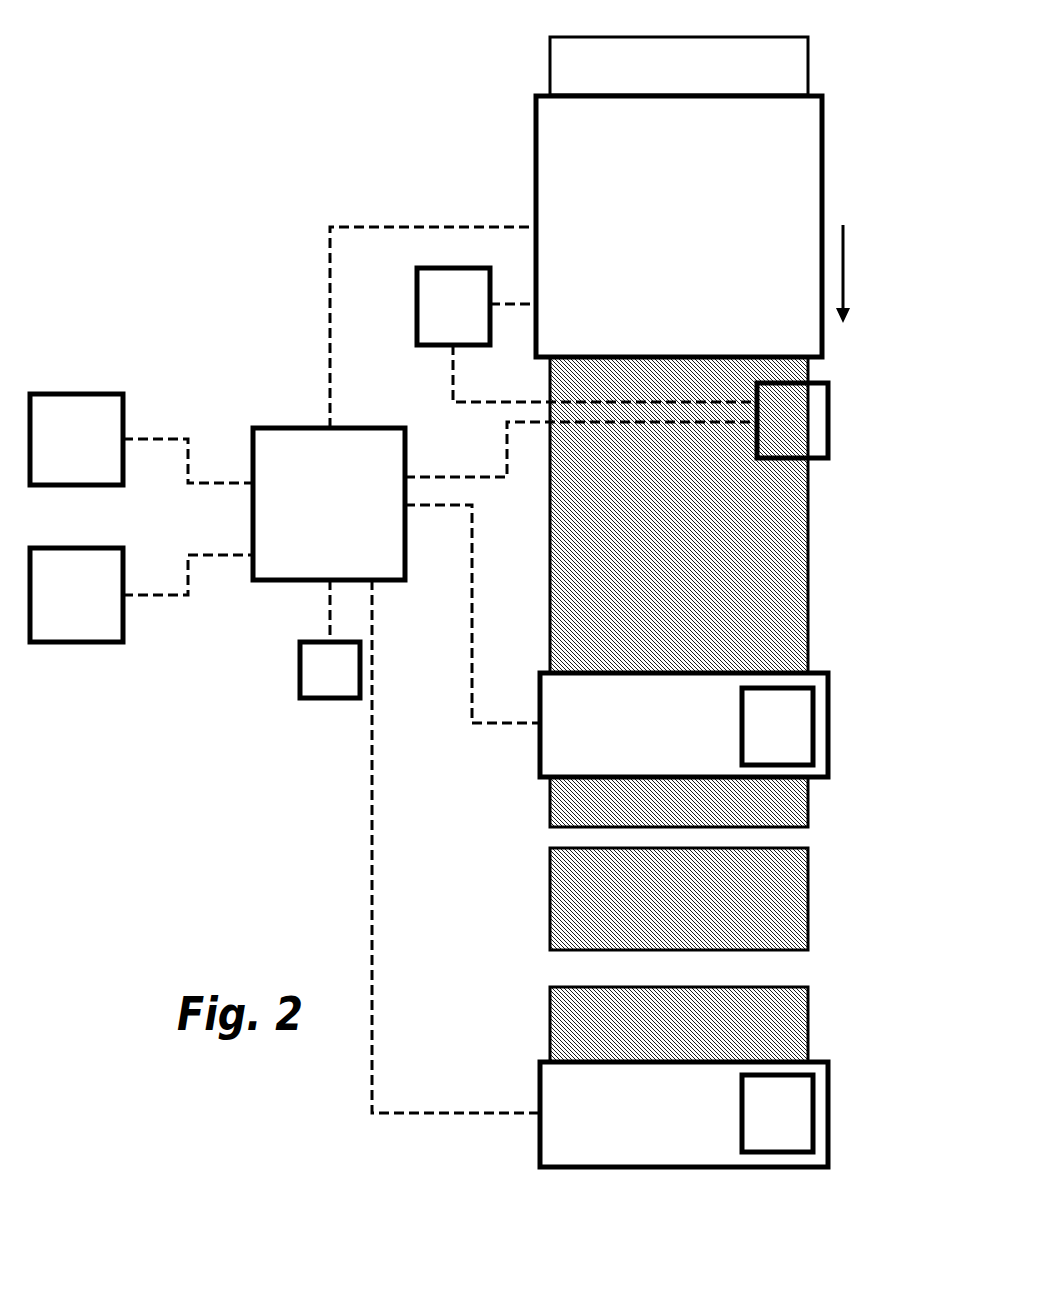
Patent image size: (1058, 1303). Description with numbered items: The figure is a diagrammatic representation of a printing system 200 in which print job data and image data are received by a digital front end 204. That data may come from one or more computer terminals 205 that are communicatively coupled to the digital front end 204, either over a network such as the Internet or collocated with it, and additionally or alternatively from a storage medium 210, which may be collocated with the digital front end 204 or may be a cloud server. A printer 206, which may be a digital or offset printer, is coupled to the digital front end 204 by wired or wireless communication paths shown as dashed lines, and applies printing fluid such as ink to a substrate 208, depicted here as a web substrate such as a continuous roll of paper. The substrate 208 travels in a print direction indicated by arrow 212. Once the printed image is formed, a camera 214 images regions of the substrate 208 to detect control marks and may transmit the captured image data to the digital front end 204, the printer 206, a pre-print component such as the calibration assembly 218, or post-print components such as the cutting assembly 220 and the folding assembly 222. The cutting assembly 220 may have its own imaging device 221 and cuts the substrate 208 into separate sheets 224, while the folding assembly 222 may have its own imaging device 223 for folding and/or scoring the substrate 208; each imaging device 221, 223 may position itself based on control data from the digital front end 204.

The printing system 200 is at (270, 131).
The digital front end 204 is at (258, 428).
The computer terminals 205 is at (66, 394).
The printer 206 is at (536, 193).
The substrate 208 is at (550, 78).
The storage medium 210 is at (300, 676).
The arrow 212 is at (843, 262).
The camera 214 is at (828, 412).
The calibration assembly 218 is at (417, 310).
The cutting assembly 220 is at (828, 710).
The imaging device 221 is at (813, 756).
The folding assembly 222 is at (813, 1133).
The imaging device 223 is at (828, 1085).
The separate sheets 224 is at (550, 917).